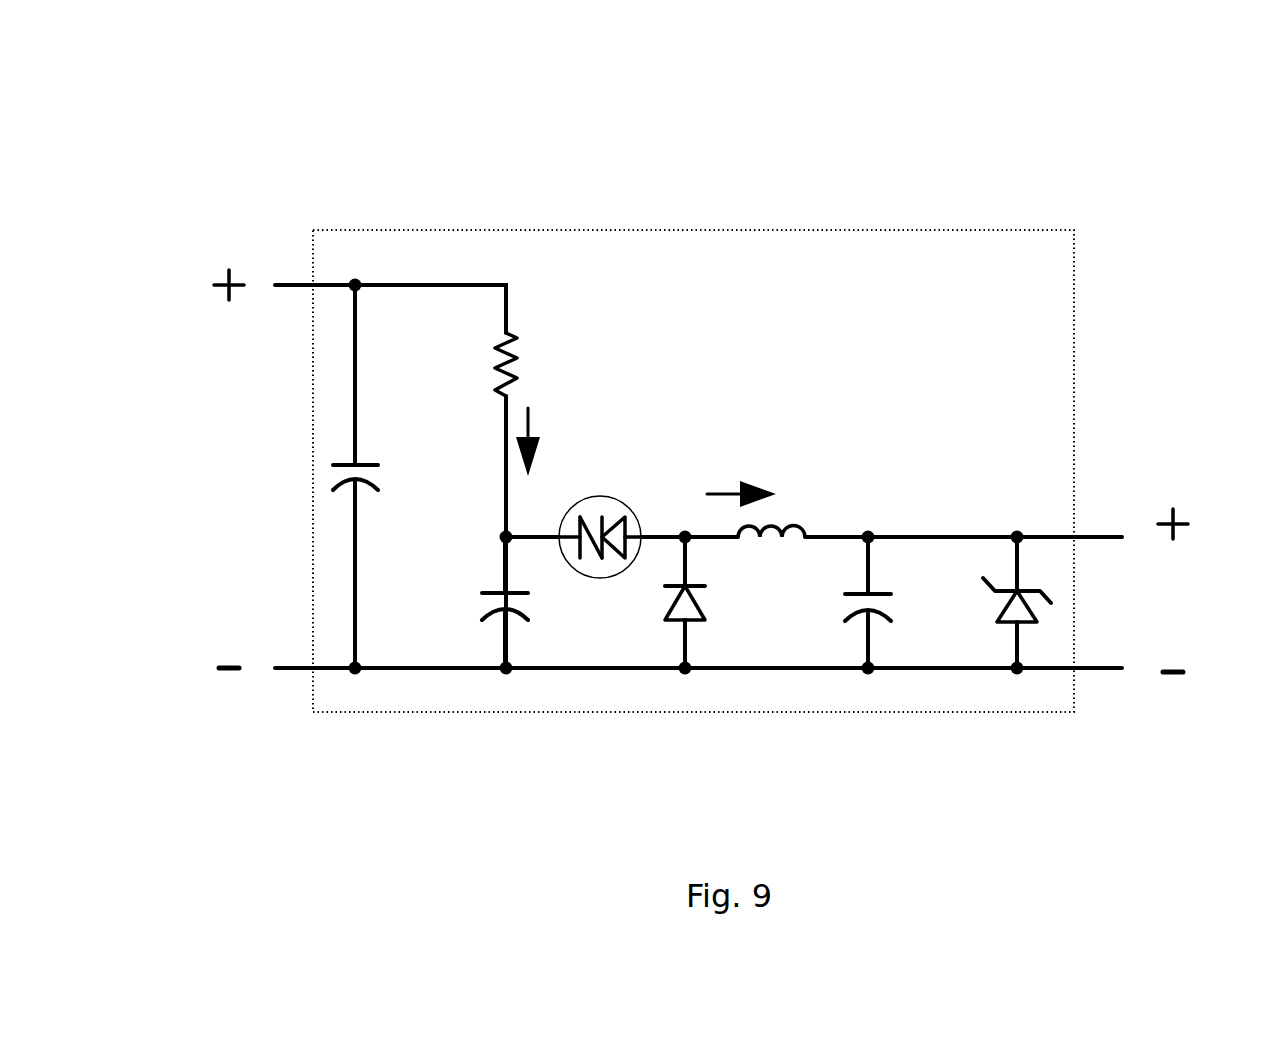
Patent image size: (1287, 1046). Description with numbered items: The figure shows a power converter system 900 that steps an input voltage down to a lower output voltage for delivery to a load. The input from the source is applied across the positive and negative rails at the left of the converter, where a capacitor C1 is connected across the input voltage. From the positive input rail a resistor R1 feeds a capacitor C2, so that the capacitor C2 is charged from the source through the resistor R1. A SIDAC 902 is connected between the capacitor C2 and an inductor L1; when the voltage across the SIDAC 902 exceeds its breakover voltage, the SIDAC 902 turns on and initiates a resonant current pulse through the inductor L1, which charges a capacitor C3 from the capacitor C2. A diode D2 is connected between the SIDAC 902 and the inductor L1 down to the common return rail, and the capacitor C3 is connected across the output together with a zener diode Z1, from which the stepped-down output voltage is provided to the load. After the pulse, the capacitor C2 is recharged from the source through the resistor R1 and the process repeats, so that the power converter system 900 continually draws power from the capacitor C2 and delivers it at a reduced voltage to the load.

The power converter system 900 is at (522, 220).
The SIDAC 902 is at (605, 488).
The resistor R1 is at (487, 364).
The capacitor C1 is at (375, 476).
The capacitor C2 is at (487, 602).
The diode D2 is at (666, 602).
The capacitor C3 is at (850, 602).
The zener diode Z1 is at (1007, 602).
The inductor L1 is at (771, 548).